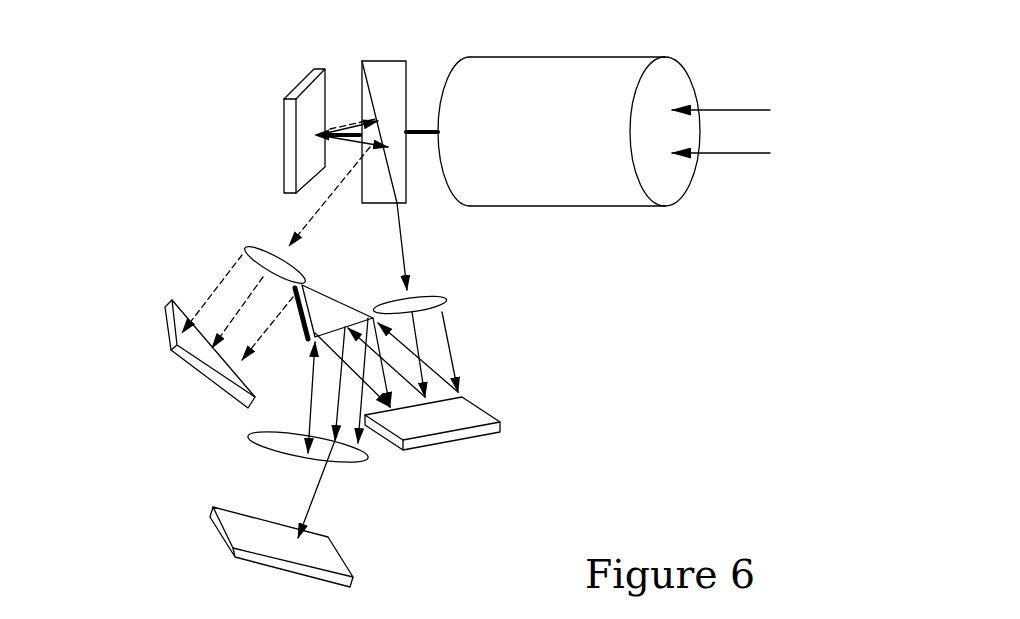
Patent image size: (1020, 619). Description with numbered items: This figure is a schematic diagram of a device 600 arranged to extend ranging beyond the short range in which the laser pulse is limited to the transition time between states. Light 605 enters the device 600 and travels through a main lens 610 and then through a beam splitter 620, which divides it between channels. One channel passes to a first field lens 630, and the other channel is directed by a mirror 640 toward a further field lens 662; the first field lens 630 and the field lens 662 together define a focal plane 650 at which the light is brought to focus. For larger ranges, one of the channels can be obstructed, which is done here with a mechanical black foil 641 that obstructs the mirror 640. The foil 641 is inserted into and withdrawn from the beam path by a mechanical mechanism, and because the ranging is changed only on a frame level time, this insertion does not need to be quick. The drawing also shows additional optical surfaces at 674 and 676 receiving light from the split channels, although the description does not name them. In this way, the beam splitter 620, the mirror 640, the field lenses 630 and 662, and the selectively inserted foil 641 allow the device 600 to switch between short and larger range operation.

The device 600 is at (108, 222).
The light 605 is at (750, 110).
The main lens 610 is at (575, 56).
The beam splitter 620 is at (385, 60).
The first field lens 630 is at (257, 247).
The mirror 640 is at (322, 291).
The mechanical black foil 641 is at (300, 323).
The focal plane 650 is at (222, 538).
The field lens 662 is at (423, 297).
The detector 674 is at (480, 408).
The mirror 676 is at (172, 361).